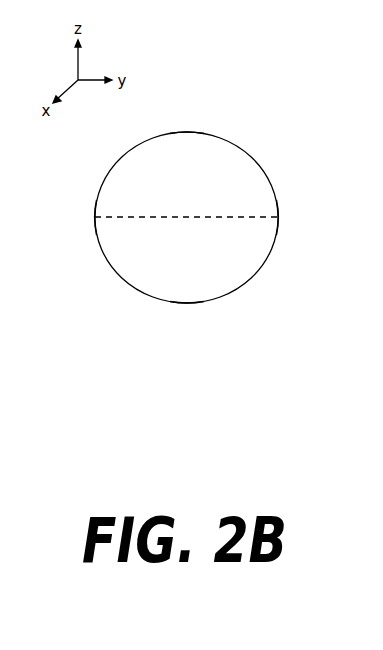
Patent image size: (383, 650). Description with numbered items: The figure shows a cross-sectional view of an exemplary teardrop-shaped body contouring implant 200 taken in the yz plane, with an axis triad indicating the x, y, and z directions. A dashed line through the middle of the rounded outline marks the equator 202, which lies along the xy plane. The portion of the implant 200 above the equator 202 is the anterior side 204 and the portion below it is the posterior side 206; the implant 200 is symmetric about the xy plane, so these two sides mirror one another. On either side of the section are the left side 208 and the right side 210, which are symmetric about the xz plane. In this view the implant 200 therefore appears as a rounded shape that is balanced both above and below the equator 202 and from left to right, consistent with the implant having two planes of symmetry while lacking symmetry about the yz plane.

The implant 200 is at (228, 302).
The equator 202 is at (238, 216).
The anterior side 204 is at (187, 132).
The posterior side 206 is at (185, 303).
The left side 208 is at (105, 216).
The right side 210 is at (268, 215).